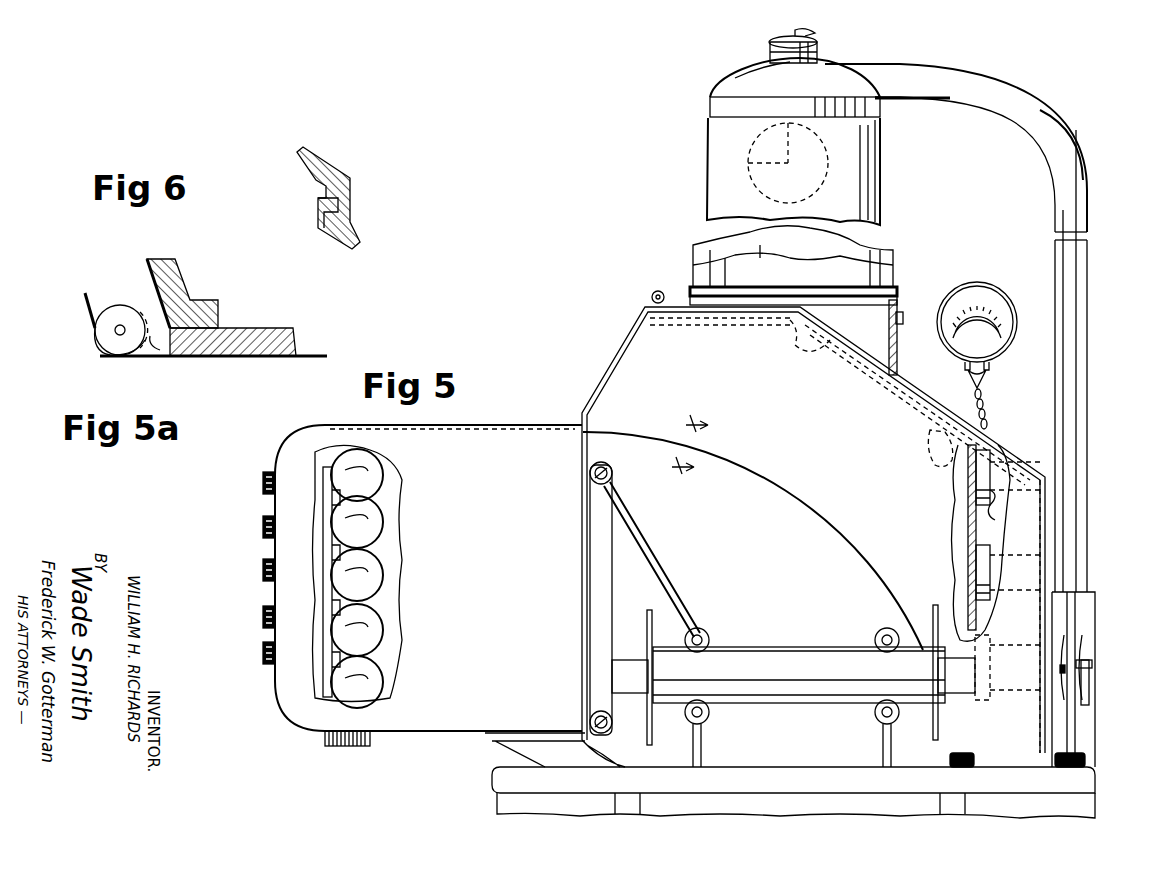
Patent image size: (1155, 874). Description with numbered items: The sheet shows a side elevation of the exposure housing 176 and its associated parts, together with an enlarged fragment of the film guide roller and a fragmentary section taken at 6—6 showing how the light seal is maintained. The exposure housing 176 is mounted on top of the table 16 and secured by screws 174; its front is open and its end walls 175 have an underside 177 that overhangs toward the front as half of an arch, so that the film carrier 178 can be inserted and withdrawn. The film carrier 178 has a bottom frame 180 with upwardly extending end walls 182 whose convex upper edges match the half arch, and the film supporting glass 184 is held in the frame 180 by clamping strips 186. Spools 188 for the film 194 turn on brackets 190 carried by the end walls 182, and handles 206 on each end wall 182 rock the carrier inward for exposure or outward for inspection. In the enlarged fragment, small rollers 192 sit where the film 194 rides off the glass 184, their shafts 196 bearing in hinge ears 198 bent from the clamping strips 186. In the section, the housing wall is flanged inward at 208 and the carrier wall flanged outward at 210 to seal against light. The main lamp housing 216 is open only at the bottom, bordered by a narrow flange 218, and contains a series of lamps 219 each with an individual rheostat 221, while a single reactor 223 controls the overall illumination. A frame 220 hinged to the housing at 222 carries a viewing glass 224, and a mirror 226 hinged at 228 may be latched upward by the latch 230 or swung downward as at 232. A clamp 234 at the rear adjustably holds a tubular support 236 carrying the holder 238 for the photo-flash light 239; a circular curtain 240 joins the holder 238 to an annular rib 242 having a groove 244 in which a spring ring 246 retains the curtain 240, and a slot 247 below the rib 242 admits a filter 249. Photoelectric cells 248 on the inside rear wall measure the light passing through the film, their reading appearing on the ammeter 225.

In FIG. 5, the table 16 is at (1085, 811).
In FIG. 5, the screws 174 is at (972, 758).
In FIG. 5, the end walls 175 is at (868, 483).
In FIG. 5, the exposure housing 176 is at (1105, 506).
In FIG. 6, the exposure housing 176 is at (348, 248).
In FIG. 5, the underside 177 is at (790, 498).
In FIG. 5, the film carrier 178 is at (756, 608).
In FIG. 5a, the frame 180 is at (183, 280).
In FIG. 5, the end walls 182 is at (782, 462).
In FIG. 6, the end walls 182 is at (298, 160).
In FIG. 5a, the film supporting glass 184 is at (278, 335).
In FIG. 5a, the clamping strips 186 is at (147, 265).
In FIG. 5, the spools 188 is at (800, 638).
In FIG. 5, the brackets 190 is at (720, 717).
In FIG. 5a, the rollers 192 is at (125, 312).
In FIG. 5a, the film 194 is at (88, 303).
In FIG. 5a, the shafts 196 is at (115, 330).
In FIG. 5a, the hinge ears 198 is at (152, 345).
In FIG. 5, the handles 206 is at (608, 604).
In FIG. 6, the inward flange 208 is at (320, 210).
In FIG. 6, the outward flange 210 is at (348, 202).
In FIG. 5, the main lamp housing 216 is at (540, 430).
In FIG. 5, the flange 218 is at (586, 560).
In FIG. 5, the lamps 219 is at (372, 565).
In FIG. 5, the frame 220 is at (612, 362).
In FIG. 5, the rheostats 221 is at (262, 527).
In FIG. 5, the hinge 222 is at (660, 292).
In FIG. 5, the reactor 223 is at (377, 745).
In FIG. 5, the viewing glass 224 is at (615, 365).
In FIG. 5, the ammeter 225 is at (992, 305).
In FIG. 5, the mirror 226 is at (958, 470).
In FIG. 5, the hinge 228 is at (962, 435).
In FIG. 5, the latch 230 is at (792, 345).
In FIG. 5, the lowered mirror position 232 is at (968, 556).
In FIG. 5, the clamp 234 is at (1090, 665).
In FIG. 5, the tubular support 236 is at (1088, 628).
In FIG. 5, the holder 238 is at (1070, 99).
In FIG. 5, the photo-flash light 239 is at (748, 165).
In FIG. 5, the curtain 240 is at (882, 207).
In FIG. 5, the annular rib 242 is at (852, 296).
In FIG. 5, the groove 244 is at (898, 290).
In FIG. 5, the spring ring 246 is at (898, 298).
In FIG. 5, the slot 247 is at (897, 345).
In FIG. 5, the photoelectric cells 248 is at (996, 520).
In FIG. 5, the filter 249 is at (903, 314).
In FIG. 5, the section line 6— 6 is at (688, 449).